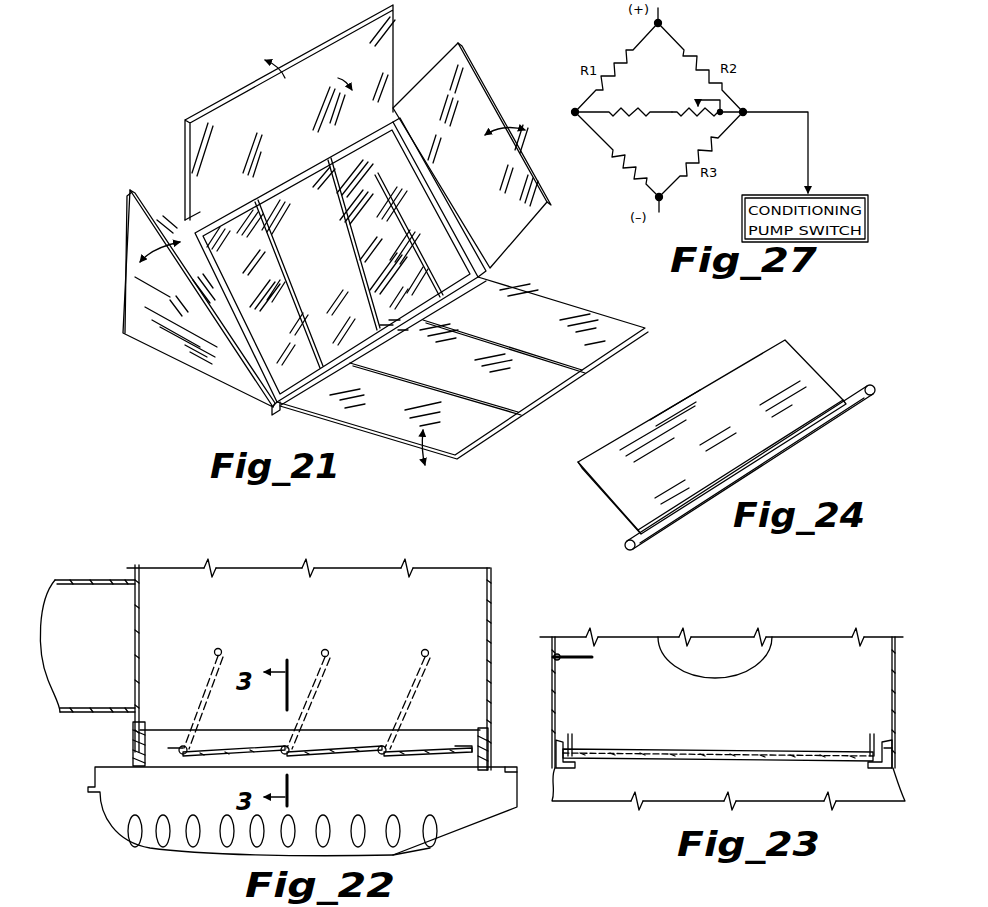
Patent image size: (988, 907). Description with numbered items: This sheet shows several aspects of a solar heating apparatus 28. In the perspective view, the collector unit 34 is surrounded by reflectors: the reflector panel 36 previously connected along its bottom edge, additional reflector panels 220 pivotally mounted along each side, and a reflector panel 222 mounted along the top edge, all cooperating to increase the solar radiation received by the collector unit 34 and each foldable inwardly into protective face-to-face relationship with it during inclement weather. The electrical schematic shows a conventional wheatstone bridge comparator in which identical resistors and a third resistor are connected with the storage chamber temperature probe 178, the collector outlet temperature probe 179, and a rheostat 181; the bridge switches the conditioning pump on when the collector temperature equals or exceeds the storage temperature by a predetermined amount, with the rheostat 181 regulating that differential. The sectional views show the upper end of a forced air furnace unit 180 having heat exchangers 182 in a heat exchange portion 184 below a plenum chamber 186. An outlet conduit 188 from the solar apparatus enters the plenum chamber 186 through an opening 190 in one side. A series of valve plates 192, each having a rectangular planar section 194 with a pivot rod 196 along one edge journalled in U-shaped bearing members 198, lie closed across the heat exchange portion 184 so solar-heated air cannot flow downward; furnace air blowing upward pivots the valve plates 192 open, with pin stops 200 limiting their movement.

In FIG. 21, the solar heating apparatus 28 is at (133, 293).
In FIG. 21, the collector unit 34 is at (440, 265).
In FIG. 21, the reflector panel 36 is at (548, 293).
In FIG. 21, the reflector panels 220 is at (218, 313).
In FIG. 21, the reflector panel 222 is at (345, 70).
In FIG. 27, the probe 178 is at (600, 107).
In FIG. 27, the probe 179 is at (600, 168).
In FIG. 27, the rheostat 181 is at (687, 108).
In FIG. 22, the forced air furnace unit 180 is at (422, 849).
In FIG. 22, the heat exchangers 182 is at (206, 812).
In FIG. 22, the heat exchange portion 184 is at (452, 818).
In FIG. 22, the plenum chamber 186 is at (368, 538).
In FIG. 23, the plenum chamber 186 is at (795, 670).
In FIG. 22, the outlet conduit 188 is at (55, 580).
In FIG. 23, the outlet conduit 188 is at (722, 655).
In FIG. 22, the opening 190 is at (137, 590).
In FIG. 24, the valve plates 192 is at (760, 346).
In FIG. 22, the valve plates 192 is at (265, 738).
In FIG. 23, the valve plates 192 is at (763, 750).
In FIG. 24, the rectangular planar section 194 is at (708, 417).
In FIG. 24, the pivot rod 196 is at (810, 428).
In FIG. 23, the pivot rod 196 is at (680, 748).
In FIG. 23, the bearing members 198 is at (576, 760).
In FIG. 22, the pin stops 200 is at (218, 648).
In FIG. 23, the pin stops 200 is at (592, 655).